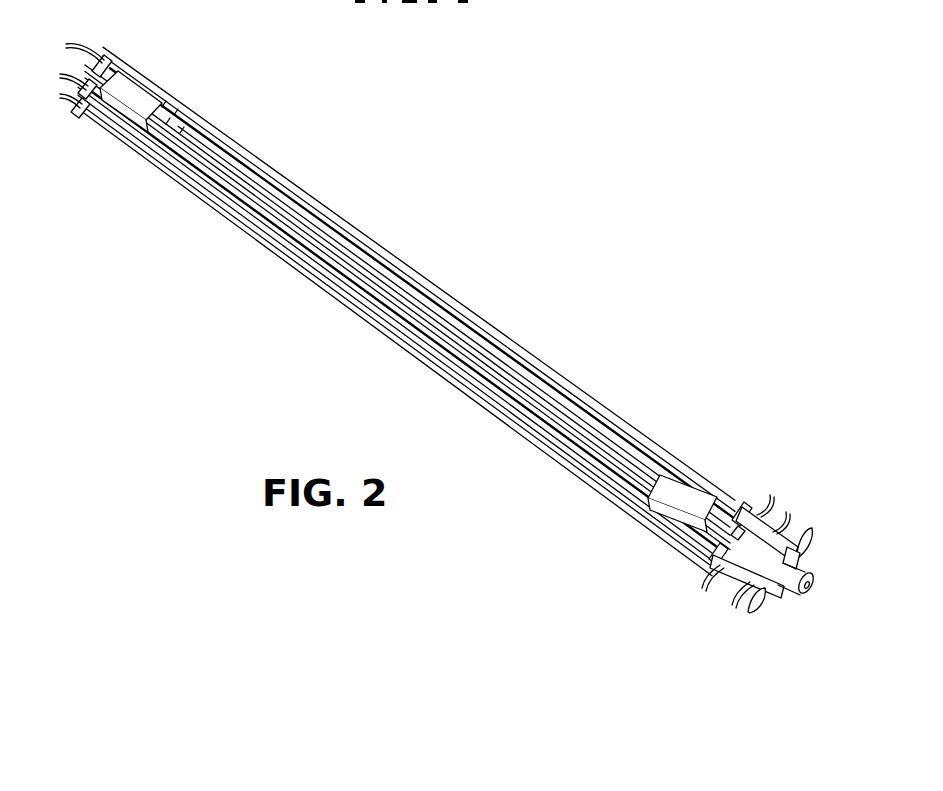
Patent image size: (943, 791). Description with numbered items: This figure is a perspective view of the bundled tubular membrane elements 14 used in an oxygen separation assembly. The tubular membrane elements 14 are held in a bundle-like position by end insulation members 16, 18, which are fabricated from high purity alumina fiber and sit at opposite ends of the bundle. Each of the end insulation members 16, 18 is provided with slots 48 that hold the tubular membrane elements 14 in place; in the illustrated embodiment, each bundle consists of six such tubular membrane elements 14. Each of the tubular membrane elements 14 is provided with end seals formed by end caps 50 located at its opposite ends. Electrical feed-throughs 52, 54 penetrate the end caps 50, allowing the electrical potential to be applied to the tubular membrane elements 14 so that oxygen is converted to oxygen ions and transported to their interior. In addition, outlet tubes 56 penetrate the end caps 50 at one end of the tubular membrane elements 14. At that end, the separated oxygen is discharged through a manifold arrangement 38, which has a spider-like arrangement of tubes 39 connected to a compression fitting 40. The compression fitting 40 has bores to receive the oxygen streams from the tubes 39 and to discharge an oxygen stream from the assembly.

The tubular membrane elements 14 is at (386, 265).
The end insulation member 16 is at (155, 81).
The end insulation member 18 is at (701, 473).
The manifold arrangement 38 is at (792, 599).
The tubes 39 is at (803, 545).
The compression fitting 40 is at (812, 578).
The slots 48 is at (142, 115).
The end caps 50 is at (106, 60).
The electrical feed-through 52 is at (66, 46).
The electrical feed-through 54 is at (757, 512).
The outlet tubes 56 is at (777, 530).